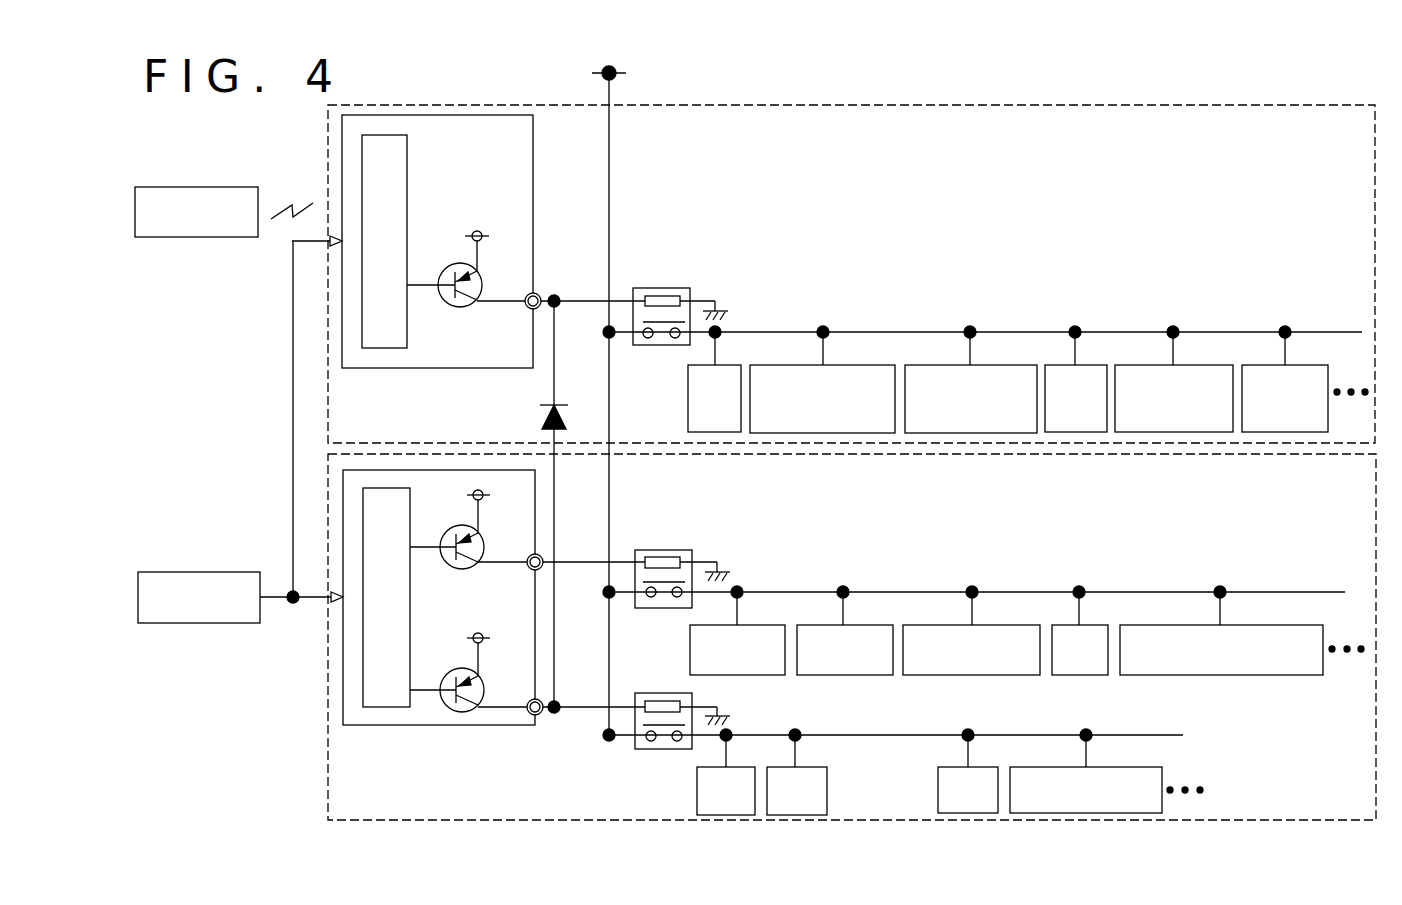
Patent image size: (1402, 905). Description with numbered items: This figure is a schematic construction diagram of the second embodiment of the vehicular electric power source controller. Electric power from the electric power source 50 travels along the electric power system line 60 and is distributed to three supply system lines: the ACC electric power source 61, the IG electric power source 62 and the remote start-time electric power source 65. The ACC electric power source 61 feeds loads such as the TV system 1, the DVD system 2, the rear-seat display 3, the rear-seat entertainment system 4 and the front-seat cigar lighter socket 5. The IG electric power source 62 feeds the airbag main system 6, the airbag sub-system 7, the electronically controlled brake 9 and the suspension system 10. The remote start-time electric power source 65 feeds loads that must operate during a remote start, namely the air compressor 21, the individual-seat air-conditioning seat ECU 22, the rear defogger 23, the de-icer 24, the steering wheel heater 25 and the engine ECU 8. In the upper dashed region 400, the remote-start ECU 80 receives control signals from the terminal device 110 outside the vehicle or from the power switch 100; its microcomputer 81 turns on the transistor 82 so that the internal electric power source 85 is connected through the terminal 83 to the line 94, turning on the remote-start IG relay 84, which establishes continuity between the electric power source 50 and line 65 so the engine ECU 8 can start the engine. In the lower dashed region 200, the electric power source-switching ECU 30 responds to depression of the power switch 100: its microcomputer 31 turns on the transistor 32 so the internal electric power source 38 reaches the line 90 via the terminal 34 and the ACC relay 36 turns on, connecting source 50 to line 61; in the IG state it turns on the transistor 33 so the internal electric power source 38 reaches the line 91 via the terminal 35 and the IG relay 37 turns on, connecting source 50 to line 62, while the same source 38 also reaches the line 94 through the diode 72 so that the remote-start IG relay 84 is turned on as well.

The TV system 1 is at (762, 624).
The DVD system 2 is at (862, 624).
The rear-seat display 3 is at (1000, 624).
The rear-seat entertainment system (RSE) 4 is at (1094, 624).
The front-seat cigar lighter socket 5 is at (1268, 624).
The airbag main system (A/B Main) 6 is at (742, 766).
The airbag sub-system (A/B Sub) 7 is at (813, 766).
The engine ECU 8 is at (1308, 366).
The electronically controlled brake (ECB) 9 is at (983, 766).
The suspension system 10 is at (1118, 766).
The air compressor 21 is at (728, 366).
The individual-seat air-conditioning seat ECU 22 is at (879, 366).
The rear defogger 23 is at (989, 366).
The de-icer 24 is at (1092, 366).
The steering wheel heater 25 is at (1195, 366).
The electric power source-switching ECU 30 is at (443, 641).
The microcomputer 31 is at (410, 598).
The transistor 32 is at (445, 533).
The transistor 33 is at (445, 676).
The ACC output terminal 34 is at (527, 556).
The IG output terminal 35 is at (527, 700).
The ACC relay 36 is at (660, 609).
The IG relay 37 is at (660, 750).
The internal electric power source 38 is at (484, 494).
The electric power source 50 is at (613, 70).
The electric power system line 60 is at (609, 145).
The ACC electric power source 61 is at (797, 590).
The IG electric power source 62 is at (762, 732).
The remote start-time electric power source 65 is at (792, 330).
The diode 72 is at (545, 410).
The remote-start ECU 80 is at (441, 275).
The microcomputer 81 is at (407, 178).
The transistor 82 is at (448, 266).
The output terminal 83 is at (527, 294).
The remote-start IG relay 84 is at (653, 348).
The internal electric power source 85 is at (480, 231).
The line 90 is at (582, 560).
The line 91 is at (582, 705).
The line 94 is at (583, 300).
The power switch 100 is at (235, 571).
The terminal device 110 is at (233, 186).
The vehicle power supply system 200 is at (1218, 820).
The remote start system 400 is at (1245, 105).